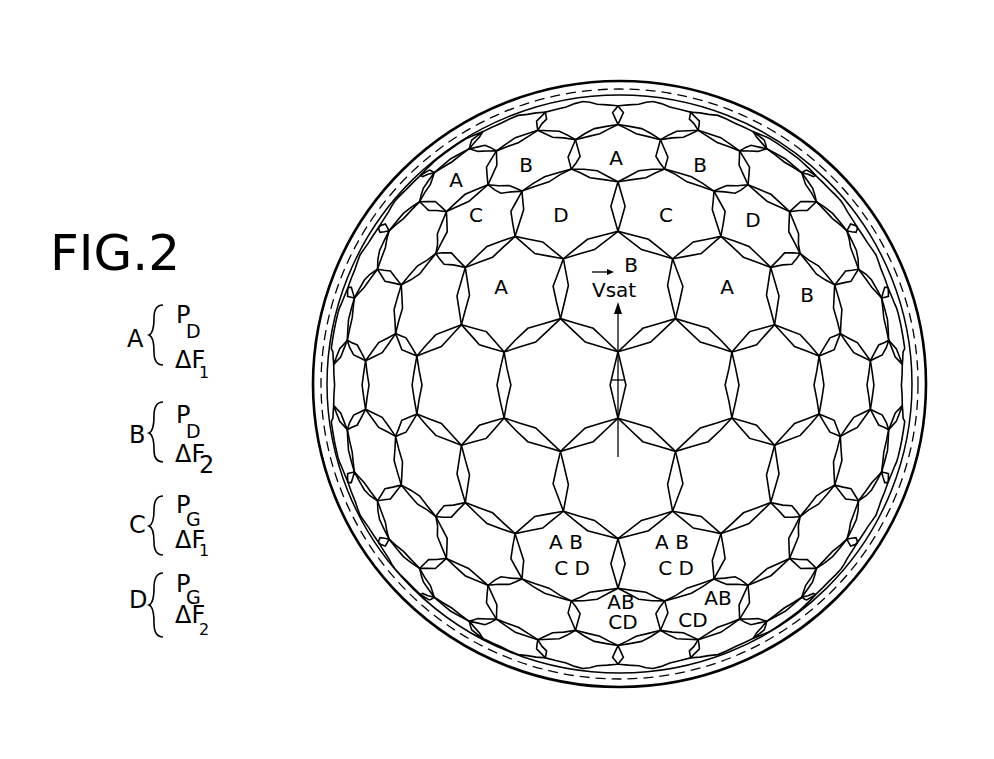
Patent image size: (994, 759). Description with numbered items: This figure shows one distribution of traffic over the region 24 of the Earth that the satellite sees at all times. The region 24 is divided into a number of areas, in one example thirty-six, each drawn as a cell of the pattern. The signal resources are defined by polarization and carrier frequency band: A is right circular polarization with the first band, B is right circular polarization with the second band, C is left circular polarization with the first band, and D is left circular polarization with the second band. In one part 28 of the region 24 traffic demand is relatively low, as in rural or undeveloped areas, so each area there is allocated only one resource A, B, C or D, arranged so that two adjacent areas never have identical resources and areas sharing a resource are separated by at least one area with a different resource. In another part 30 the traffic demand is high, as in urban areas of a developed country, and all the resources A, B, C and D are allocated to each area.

The region 24 is at (421, 480).
The low traffic part 28 is at (403, 245).
The high traffic part 30 is at (539, 562).